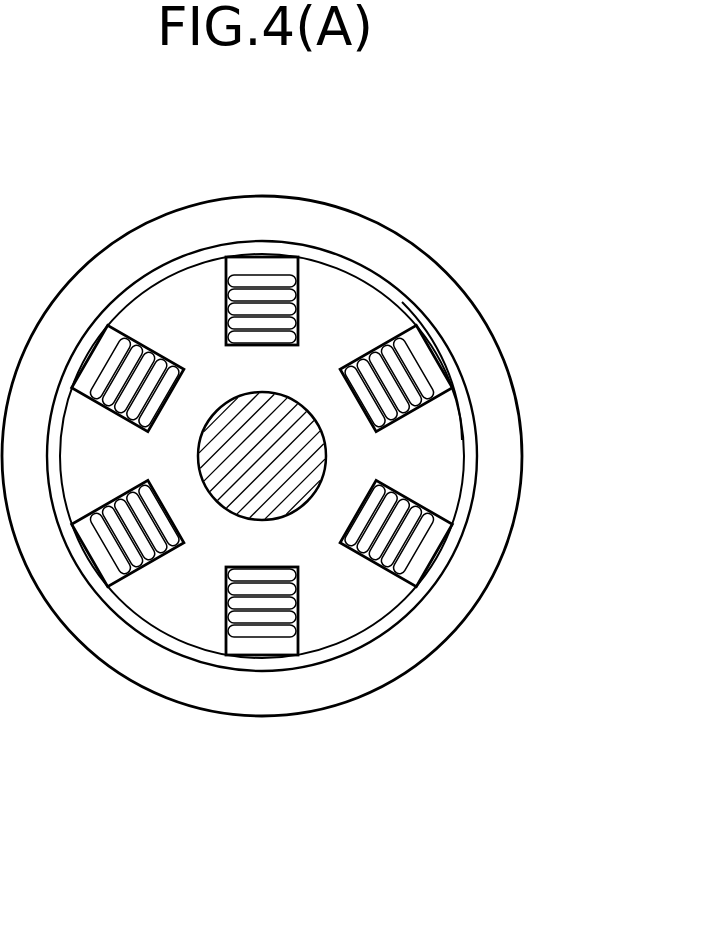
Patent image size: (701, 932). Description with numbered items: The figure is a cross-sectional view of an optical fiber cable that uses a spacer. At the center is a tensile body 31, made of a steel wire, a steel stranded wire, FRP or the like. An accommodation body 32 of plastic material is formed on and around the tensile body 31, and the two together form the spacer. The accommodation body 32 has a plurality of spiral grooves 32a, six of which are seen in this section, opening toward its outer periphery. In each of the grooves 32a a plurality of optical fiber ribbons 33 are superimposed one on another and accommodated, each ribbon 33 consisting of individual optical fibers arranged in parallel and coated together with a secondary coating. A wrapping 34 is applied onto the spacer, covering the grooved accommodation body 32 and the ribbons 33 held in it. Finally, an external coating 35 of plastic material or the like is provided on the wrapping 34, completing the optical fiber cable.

The tensile body 31 is at (305, 410).
The accommodation body 32 is at (367, 310).
The spiral grooves 32a is at (443, 387).
The optical fiber ribbon 33 is at (415, 375).
The wrapping 34 is at (427, 332).
The external coating 35 is at (458, 578).